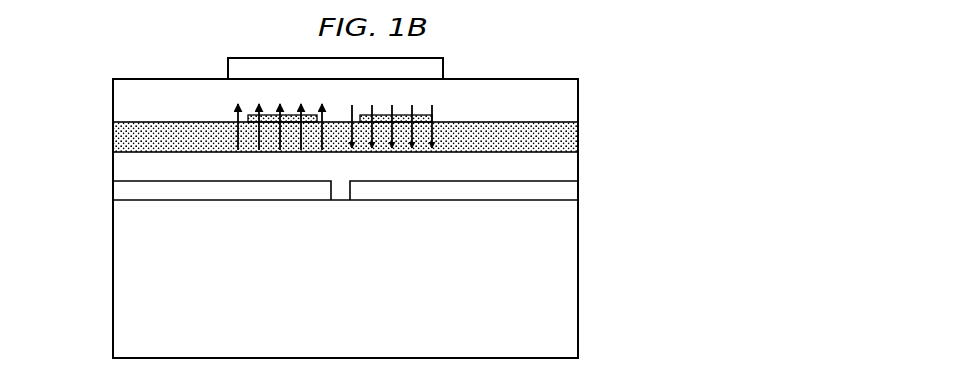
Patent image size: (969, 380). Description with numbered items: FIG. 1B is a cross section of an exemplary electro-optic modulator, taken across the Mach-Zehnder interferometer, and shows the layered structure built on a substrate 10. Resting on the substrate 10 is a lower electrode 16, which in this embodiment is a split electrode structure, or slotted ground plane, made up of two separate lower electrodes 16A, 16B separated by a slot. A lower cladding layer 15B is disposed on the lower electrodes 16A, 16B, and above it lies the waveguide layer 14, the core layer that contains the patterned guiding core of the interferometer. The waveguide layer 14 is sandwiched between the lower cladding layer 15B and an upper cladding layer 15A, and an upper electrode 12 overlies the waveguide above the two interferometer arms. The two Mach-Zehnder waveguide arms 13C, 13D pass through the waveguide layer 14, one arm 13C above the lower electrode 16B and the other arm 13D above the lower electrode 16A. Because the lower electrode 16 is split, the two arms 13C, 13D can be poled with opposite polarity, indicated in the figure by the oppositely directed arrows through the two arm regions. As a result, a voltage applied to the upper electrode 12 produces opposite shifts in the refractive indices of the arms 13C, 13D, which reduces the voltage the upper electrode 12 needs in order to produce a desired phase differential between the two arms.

The substrate 10 is at (578, 287).
The upper electrode 12 is at (228, 70).
The waveguide arm 13C is at (266, 128).
The waveguide arm 13D is at (384, 128).
The waveguide layer 14 is at (553, 120).
The upper cladding layer 15A is at (113, 92).
The lower cladding layer 15B is at (113, 162).
The lower electrode 16 is at (334, 203).
The lower electrode 16A is at (578, 189).
The lower electrode 16B is at (113, 195).